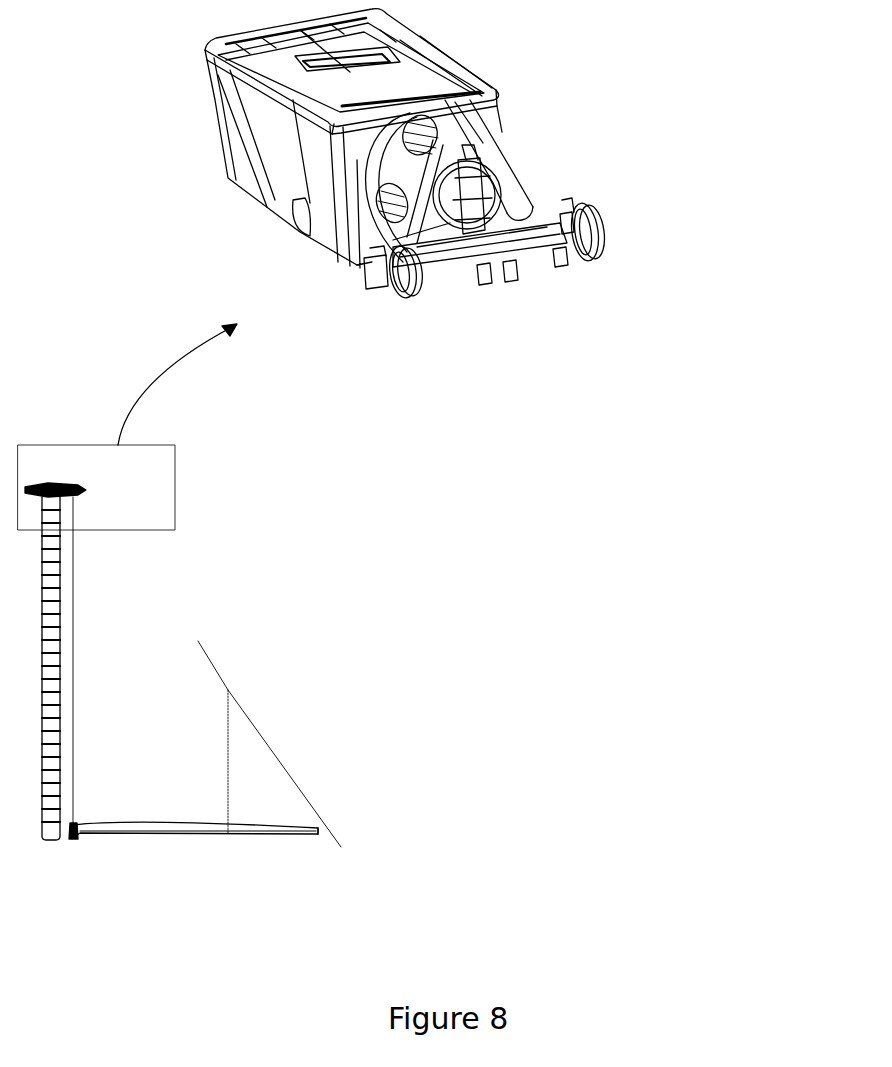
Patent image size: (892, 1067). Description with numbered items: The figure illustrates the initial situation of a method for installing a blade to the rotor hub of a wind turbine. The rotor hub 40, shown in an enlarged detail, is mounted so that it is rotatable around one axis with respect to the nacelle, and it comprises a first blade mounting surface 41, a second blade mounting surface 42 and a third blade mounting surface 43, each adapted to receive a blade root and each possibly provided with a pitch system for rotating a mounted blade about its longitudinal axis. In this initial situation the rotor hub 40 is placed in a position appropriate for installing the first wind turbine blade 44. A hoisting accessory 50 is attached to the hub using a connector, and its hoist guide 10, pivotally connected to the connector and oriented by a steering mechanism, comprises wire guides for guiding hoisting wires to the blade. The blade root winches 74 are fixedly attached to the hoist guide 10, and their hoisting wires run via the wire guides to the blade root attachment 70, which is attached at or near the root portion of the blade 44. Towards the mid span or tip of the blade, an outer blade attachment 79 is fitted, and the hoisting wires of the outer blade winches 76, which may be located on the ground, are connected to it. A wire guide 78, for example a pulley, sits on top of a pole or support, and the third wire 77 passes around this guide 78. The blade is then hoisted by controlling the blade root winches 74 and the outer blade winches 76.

The hoist guide 10 is at (562, 263).
The rotor hub 40 is at (66, 487).
The first blade mounting surface 41 is at (455, 245).
The second blade mounting surface 42 is at (345, 177).
The third blade mounting surface 43 is at (513, 150).
The wind turbine blade 44 is at (131, 821).
The hoisting accessory 50 is at (675, 248).
The blade root attachment 70 is at (73, 843).
The blade root winches 74 is at (402, 312).
The outer blade winches 76 is at (343, 845).
The third wire 77 is at (250, 720).
The wire guide 78 is at (198, 641).
The outer blade attachment 79 is at (73, 705).